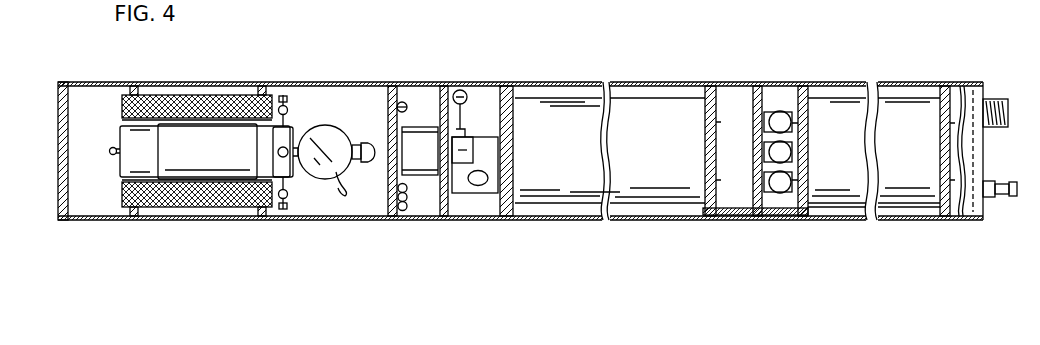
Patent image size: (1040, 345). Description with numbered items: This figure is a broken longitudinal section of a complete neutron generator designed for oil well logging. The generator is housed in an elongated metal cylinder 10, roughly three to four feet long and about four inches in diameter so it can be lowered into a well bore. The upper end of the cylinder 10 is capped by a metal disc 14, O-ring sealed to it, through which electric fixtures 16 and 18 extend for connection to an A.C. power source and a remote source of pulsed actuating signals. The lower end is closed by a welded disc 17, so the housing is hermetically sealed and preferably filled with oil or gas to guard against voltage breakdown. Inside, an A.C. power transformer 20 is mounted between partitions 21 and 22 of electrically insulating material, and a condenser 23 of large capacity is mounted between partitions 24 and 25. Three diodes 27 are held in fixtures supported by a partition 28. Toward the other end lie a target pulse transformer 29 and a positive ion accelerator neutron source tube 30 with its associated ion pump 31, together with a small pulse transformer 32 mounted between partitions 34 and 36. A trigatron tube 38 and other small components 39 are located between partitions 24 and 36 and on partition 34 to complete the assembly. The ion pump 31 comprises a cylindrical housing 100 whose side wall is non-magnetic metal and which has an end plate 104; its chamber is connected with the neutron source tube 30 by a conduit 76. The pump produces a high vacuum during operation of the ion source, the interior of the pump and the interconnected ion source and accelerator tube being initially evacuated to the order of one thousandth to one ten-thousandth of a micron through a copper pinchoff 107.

The elongated metal cylinder 10 is at (688, 80).
The metal disc 14 is at (975, 95).
The electric fixture 16 is at (997, 99).
The welded disc 17 is at (58, 114).
The electric fixture 18 is at (993, 182).
The A.C. power transformer 20 is at (890, 110).
The partition 21 is at (947, 83).
The partition 22 is at (812, 83).
The condenser 23 is at (628, 110).
The partition 24 is at (505, 83).
The partition 25 is at (717, 83).
The diodes 27 is at (782, 119).
The partition 28 is at (758, 216).
The target pulse transformer 29 is at (194, 97).
The positive ion accelerator neutron source tube 30 is at (230, 142).
The ion pump 31 is at (328, 126).
The small pulse transformer 32 is at (412, 130).
The partition 34 is at (392, 87).
The partition 36 is at (442, 88).
The trigatron tube 38 is at (480, 181).
The small components 39 is at (462, 163).
The conduit 76 is at (293, 141).
The cylindrical housing 100 is at (318, 173).
The end plate 104 is at (363, 143).
The copper pinchoff 107 is at (345, 196).